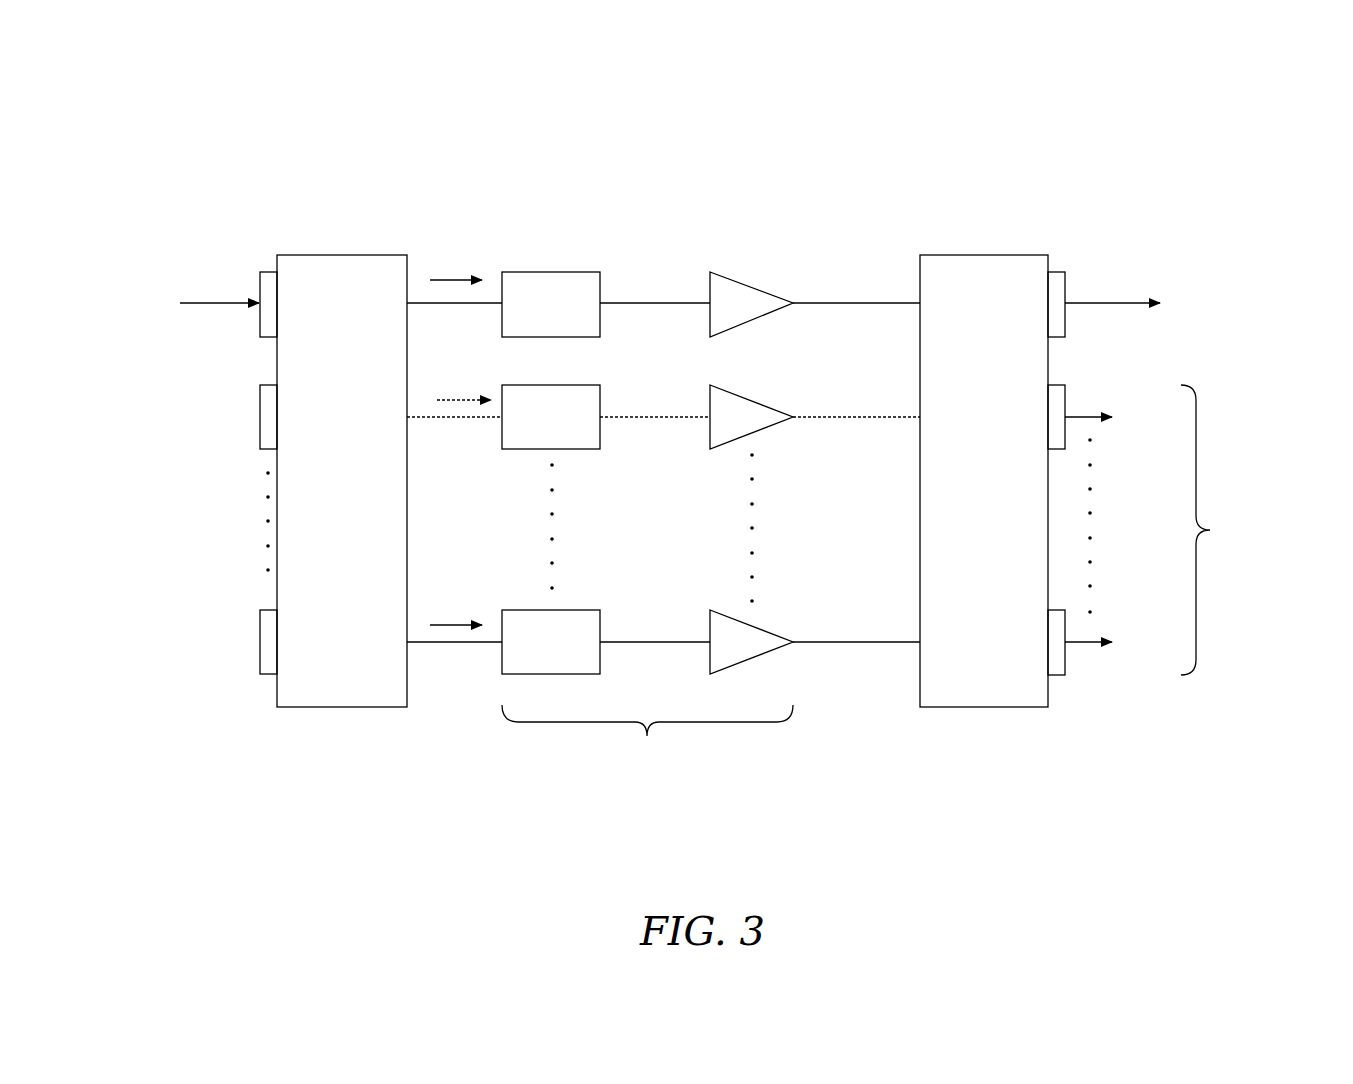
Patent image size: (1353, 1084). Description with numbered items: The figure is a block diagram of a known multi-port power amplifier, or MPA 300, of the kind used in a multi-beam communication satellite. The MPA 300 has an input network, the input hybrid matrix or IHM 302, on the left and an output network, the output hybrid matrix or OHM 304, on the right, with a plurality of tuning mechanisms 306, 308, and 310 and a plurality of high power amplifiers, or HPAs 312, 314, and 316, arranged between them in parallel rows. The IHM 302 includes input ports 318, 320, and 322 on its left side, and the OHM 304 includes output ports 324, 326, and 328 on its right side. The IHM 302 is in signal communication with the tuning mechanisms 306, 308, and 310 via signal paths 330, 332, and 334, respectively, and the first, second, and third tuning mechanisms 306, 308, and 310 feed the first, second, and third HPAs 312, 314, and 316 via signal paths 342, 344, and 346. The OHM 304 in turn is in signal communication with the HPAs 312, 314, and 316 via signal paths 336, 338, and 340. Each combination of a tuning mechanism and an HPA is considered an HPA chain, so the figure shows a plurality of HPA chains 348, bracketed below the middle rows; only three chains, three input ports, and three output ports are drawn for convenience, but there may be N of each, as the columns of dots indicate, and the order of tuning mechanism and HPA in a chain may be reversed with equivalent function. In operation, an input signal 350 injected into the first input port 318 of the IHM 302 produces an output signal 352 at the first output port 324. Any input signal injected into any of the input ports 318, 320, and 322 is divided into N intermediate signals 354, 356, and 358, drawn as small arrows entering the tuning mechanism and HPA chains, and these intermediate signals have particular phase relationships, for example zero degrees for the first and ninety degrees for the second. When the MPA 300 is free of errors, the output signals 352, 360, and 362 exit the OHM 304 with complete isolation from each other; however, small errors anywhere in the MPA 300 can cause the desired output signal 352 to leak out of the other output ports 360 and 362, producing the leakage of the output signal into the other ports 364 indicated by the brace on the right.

The multi-port power amplifier (MPA) 300 is at (1050, 100).
The input hybrid matrix (IHM) 302 is at (336, 481).
The output hybrid matrix (OHM) 304 is at (984, 481).
The first tuning mechanism 306 is at (551, 304).
The second tuning mechanism 308 is at (551, 417).
The third tuning mechanism 310 is at (551, 642).
The first high power amplifier (HPA) 312 is at (751, 304).
The second high power amplifier (HPA) 314 is at (751, 417).
The third high power amplifier (HPA) 316 is at (751, 642).
The first input port 318 is at (260, 291).
The input port 320 is at (260, 419).
The input port 322 is at (260, 644).
The first output port 324 is at (1068, 278).
The output port 326 is at (1068, 400).
The output port 328 is at (1067, 658).
The signal path 330 is at (467, 306).
The signal path 332 is at (470, 420).
The signal path 334 is at (470, 645).
The signal path 336 is at (832, 302).
The signal path 338 is at (840, 415).
The signal path 340 is at (850, 640).
The signal path 342 is at (665, 302).
The signal path 344 is at (665, 415).
The signal path 346 is at (670, 640).
The HPA chains 348 is at (647, 750).
The input signal 350 is at (183, 304).
The output signal 352 is at (1144, 300).
The intermediate signal 354 is at (445, 277).
The intermediate signal 356 is at (450, 398).
The intermediate signal 358 is at (440, 621).
The output signal at other output port 360 is at (1109, 417).
The output signal at other output port 362 is at (1109, 642).
The leakage of the output signal into the other ports 364 is at (1237, 530).